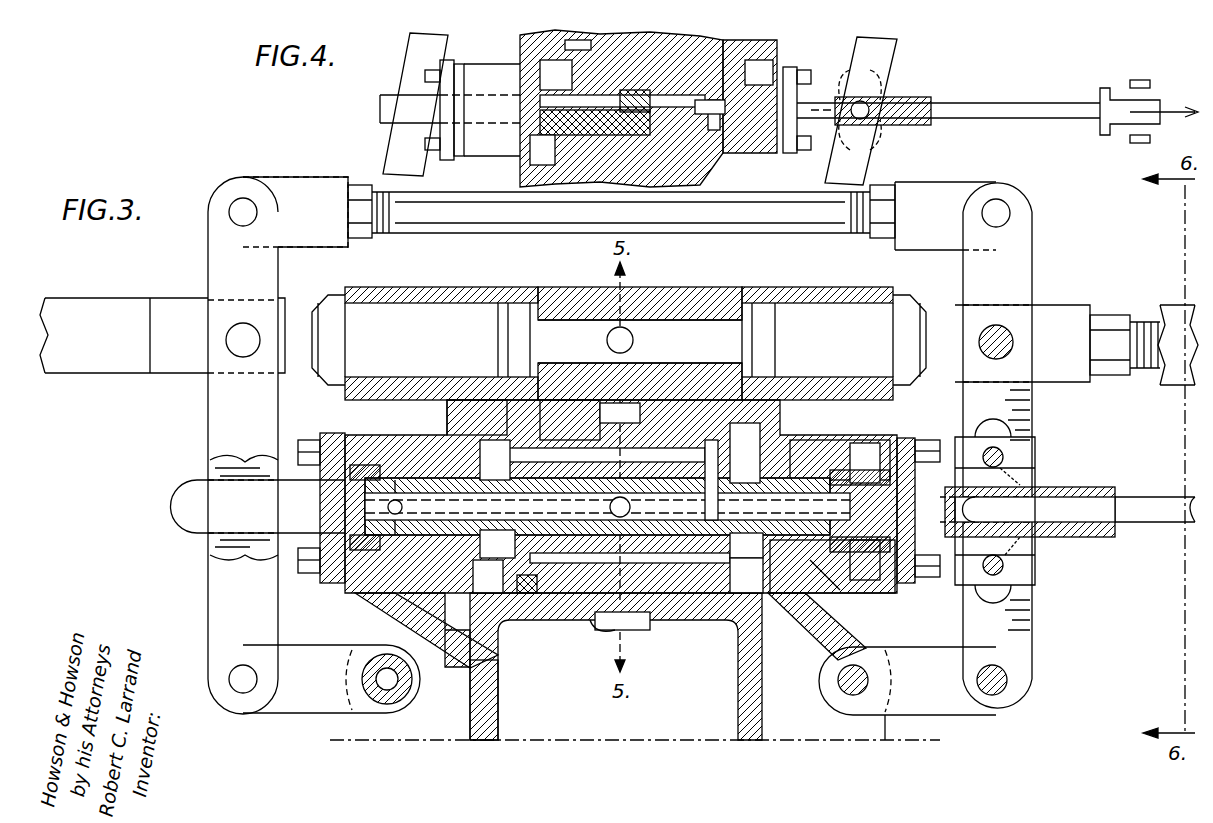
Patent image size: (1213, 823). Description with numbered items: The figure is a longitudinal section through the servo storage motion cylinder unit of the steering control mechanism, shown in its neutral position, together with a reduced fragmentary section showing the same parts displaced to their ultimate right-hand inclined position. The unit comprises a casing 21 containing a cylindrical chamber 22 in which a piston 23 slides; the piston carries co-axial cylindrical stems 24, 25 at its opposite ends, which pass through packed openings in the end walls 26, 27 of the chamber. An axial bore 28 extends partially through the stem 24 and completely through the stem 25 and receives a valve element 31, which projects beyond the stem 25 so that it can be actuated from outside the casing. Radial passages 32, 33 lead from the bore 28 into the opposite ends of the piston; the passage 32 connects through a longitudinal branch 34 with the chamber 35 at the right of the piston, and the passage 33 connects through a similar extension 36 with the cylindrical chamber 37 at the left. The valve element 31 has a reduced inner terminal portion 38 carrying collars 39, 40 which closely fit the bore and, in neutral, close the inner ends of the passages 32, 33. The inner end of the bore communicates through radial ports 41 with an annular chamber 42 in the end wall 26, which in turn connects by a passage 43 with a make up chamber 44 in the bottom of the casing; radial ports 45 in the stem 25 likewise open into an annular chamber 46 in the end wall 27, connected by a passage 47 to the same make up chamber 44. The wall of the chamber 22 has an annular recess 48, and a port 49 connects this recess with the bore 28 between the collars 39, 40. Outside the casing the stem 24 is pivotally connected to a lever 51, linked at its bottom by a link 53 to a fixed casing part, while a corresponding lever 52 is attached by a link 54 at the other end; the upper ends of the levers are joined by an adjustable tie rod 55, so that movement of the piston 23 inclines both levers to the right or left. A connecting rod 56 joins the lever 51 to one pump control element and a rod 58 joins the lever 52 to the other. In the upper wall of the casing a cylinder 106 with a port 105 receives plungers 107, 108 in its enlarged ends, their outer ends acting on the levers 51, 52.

In FIG. 3, the casing 21 is at (445, 425).
In FIG. 3, the cylindrical chamber 22 is at (780, 428).
In FIG. 4, the piston 23 is at (530, 150).
In FIG. 3, the piston 23 is at (720, 595).
In FIG. 4, the stem 24 is at (440, 118).
In FIG. 3, the stem 24 is at (492, 478).
In FIG. 4, the stem 25 is at (905, 120).
In FIG. 3, the stem 25 is at (1075, 488).
In FIG. 3, the end wall 26 is at (410, 590).
In FIG. 3, the end wall 27 is at (820, 593).
In FIG. 4, the axial bore 28 is at (540, 101).
In FIG. 3, the axial bore 28 is at (497, 547).
In FIG. 4, the valve element 31 is at (993, 103).
In FIG. 3, the valve element 31 is at (1168, 515).
In FIG. 4, the passage 32 is at (530, 140).
In FIG. 3, the passage 32 is at (517, 580).
In FIG. 4, the passage 33 is at (735, 92).
In FIG. 3, the passage 33 is at (715, 480).
In FIG. 3, the longitudinal branch 34 is at (680, 600).
In FIG. 4, the chamber 35 is at (730, 90).
In FIG. 3, the chamber 35 is at (760, 585).
In FIG. 4, the extension 36 is at (700, 52).
In FIG. 3, the extension 36 is at (580, 430).
In FIG. 4, the cylindrical chamber 37 is at (478, 158).
In FIG. 3, the cylindrical chamber 37 is at (490, 420).
In FIG. 4, the reduced inner terminal portion 38 is at (718, 120).
In FIG. 3, the reduced inner terminal portion 38 is at (653, 512).
In FIG. 4, the collar 39 is at (565, 100).
In FIG. 3, the collar 39 is at (525, 510).
In FIG. 4, the collar 40 is at (720, 118).
In FIG. 3, the collar 40 is at (746, 545).
In FIG. 3, the radial ports 41 is at (402, 508).
In FIG. 3, the annular chamber 42 is at (360, 580).
In FIG. 3, the passage 43 is at (435, 618).
In FIG. 3, the make up chamber 44 is at (500, 685).
In FIG. 3, the radial ports 45 is at (835, 580).
In FIG. 3, the annular chamber 46 is at (850, 445).
In FIG. 3, the passage 47 is at (815, 625).
In FIG. 4, the annular recess 48 is at (540, 38).
In FIG. 3, the annular recess 48 is at (600, 628).
In FIG. 4, the port 49 is at (640, 95).
In FIG. 3, the port 49 is at (625, 500).
In FIG. 4, the lever 51 is at (422, 60).
In FIG. 3, the lever 51 is at (215, 600).
In FIG. 4, the lever 52 is at (880, 53).
In FIG. 3, the lever 52 is at (1025, 600).
In FIG. 3, the link 53 is at (331, 679).
In FIG. 3, the link 54 is at (913, 693).
In FIG. 3, the adjustable tie rod 55 is at (530, 238).
In FIG. 3, the connecting rod 56 is at (120, 310).
In FIG. 3, the rod 58 is at (1175, 320).
In FIG. 3, the port 105 is at (632, 336).
In FIG. 3, the cylinder 106 is at (575, 320).
In FIG. 3, the plunger 107 is at (398, 320).
In FIG. 3, the plunger 108 is at (808, 320).